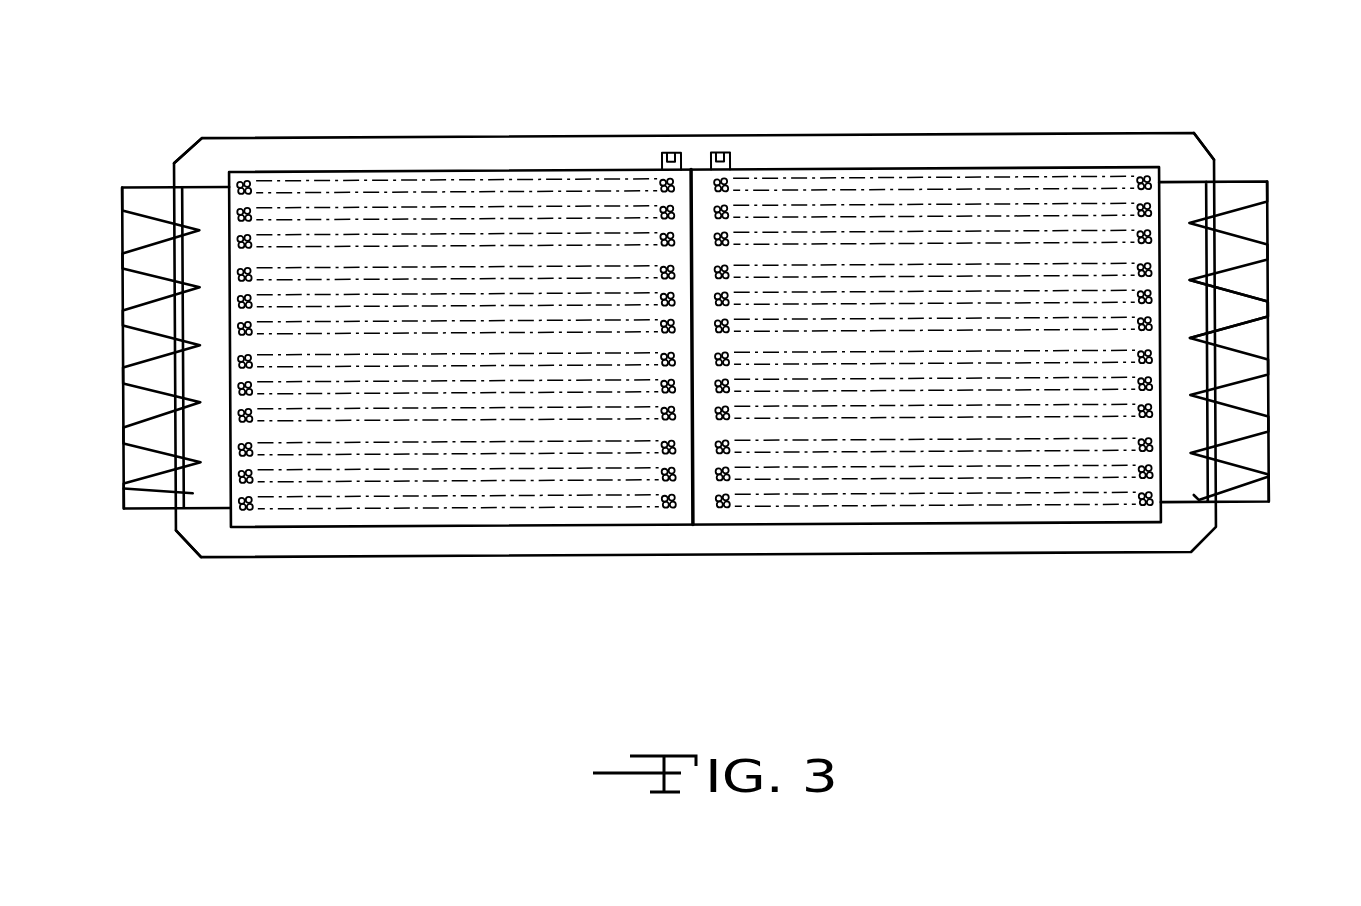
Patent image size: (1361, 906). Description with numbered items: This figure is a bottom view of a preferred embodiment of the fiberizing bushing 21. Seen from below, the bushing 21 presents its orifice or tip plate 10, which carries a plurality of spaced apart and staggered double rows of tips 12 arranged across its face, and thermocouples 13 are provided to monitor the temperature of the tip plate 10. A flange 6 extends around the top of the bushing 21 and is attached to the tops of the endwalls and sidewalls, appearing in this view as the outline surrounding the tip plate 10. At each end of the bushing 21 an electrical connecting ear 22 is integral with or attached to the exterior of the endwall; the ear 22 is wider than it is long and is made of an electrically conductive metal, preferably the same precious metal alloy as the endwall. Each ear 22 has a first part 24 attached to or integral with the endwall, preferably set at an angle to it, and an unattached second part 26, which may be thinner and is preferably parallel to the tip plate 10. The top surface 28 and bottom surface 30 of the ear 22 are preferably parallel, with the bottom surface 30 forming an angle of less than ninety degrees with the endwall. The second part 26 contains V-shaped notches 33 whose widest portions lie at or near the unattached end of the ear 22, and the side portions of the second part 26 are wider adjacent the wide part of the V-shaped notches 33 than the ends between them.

The flange 6 is at (209, 153).
The tip plate 10 is at (917, 200).
The tips 12 is at (250, 184).
The thermocouples 13 is at (672, 155).
The bushing 21 is at (502, 122).
The electrical connecting ear 22 is at (1192, 172).
The first part 24 is at (165, 492).
The second part 26 is at (132, 432).
The top surface 28 is at (150, 197).
The bottom surface 30 is at (160, 302).
The V-shaped notches 33 is at (1250, 344).